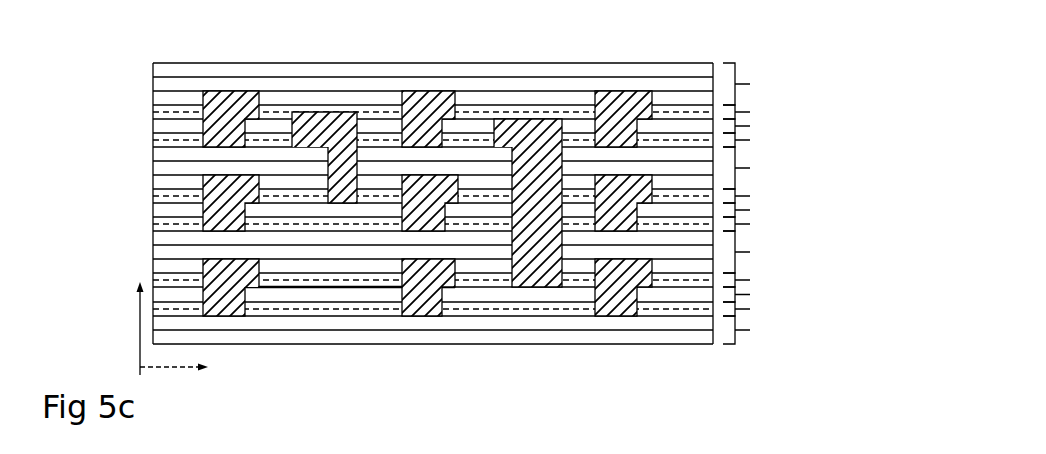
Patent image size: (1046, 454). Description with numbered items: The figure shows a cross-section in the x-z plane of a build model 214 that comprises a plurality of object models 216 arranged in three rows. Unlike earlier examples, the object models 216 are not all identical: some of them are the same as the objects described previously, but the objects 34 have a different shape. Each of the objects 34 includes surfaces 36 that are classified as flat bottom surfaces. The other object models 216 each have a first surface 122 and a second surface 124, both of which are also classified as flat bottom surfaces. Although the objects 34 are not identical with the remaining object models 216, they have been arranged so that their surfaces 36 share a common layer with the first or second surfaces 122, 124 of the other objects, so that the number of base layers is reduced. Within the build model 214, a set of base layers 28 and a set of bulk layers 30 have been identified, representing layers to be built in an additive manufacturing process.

The build model 214 is at (134, 44).
The object models 216 is at (530, 190).
The objects 34 is at (520, 275).
The surfaces 36 is at (502, 148).
The bulk layers 30 is at (810, 316).
The base layers 28 is at (810, 250).
The first surface 122 is at (226, 316).
The second surface 124 is at (255, 287).